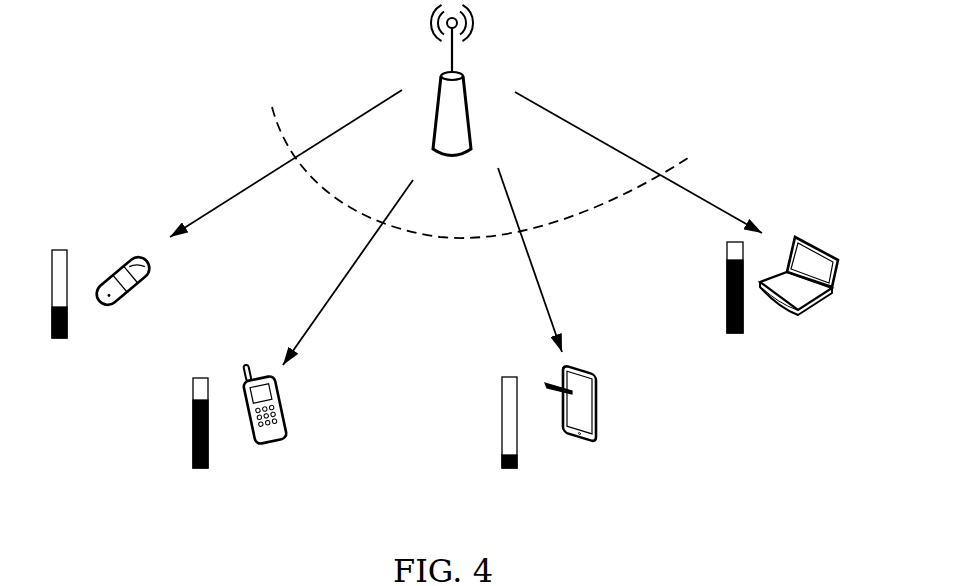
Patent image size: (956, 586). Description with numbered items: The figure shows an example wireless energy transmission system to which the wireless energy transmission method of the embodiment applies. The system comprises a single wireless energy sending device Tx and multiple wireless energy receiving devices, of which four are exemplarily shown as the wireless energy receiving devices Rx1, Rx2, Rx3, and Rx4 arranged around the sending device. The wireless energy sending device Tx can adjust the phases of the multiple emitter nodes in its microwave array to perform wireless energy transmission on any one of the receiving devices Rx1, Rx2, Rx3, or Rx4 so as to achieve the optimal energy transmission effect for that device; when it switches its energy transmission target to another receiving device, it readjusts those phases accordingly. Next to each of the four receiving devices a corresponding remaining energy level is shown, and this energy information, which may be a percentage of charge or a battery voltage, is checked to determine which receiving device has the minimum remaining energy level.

The wireless energy sending device Tx is at (452, 97).
The wireless energy receiving device Rx1 is at (247, 216).
The wireless energy receiving device Rx2 is at (326, 325).
The wireless energy receiving device Rx3 is at (547, 319).
The wireless energy receiving device Rx4 is at (676, 214).